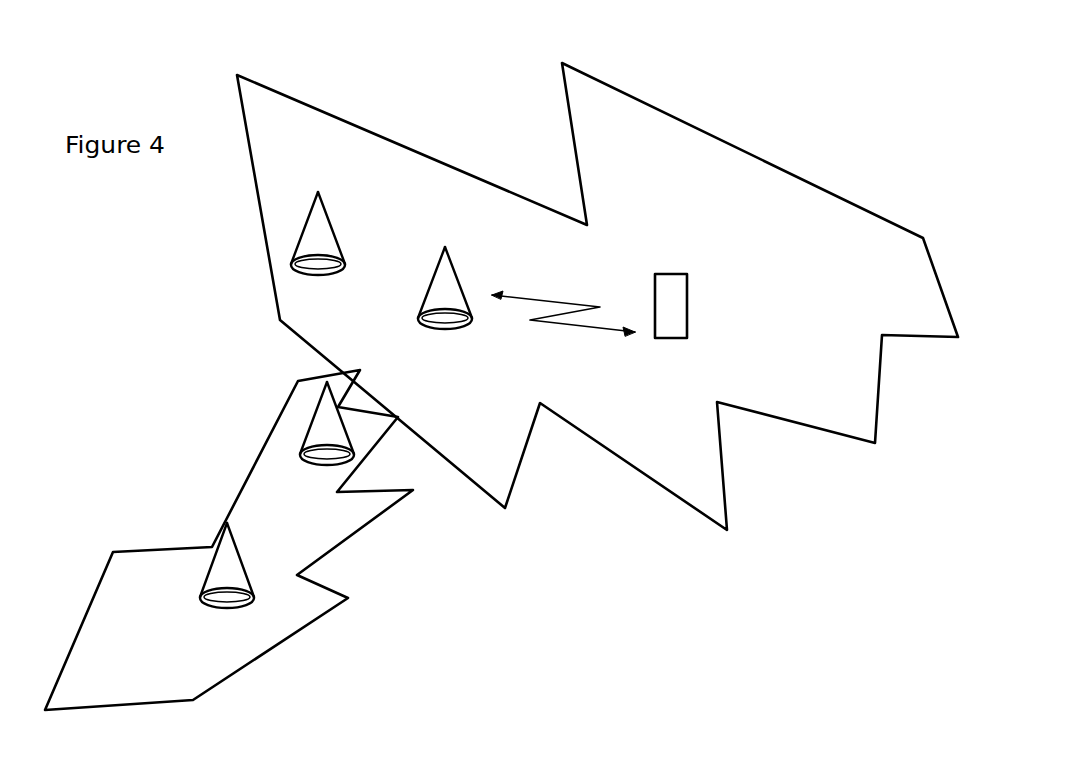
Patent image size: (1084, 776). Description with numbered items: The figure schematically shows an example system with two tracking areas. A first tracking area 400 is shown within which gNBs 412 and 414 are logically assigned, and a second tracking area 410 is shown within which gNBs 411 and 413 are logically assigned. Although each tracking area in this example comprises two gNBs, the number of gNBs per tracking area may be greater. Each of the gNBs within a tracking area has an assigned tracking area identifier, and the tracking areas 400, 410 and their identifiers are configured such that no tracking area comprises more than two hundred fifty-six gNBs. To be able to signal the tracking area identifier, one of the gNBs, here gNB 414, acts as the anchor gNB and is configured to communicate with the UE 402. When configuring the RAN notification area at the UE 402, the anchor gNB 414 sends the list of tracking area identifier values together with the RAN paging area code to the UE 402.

The first tracking area 400 is at (405, 153).
The UE 402 is at (695, 283).
The second tracking area 410 is at (365, 605).
The gNB 411 is at (385, 448).
The gNB 412 is at (277, 255).
The gNB 413 is at (258, 577).
The anchor gNB 414 is at (473, 253).